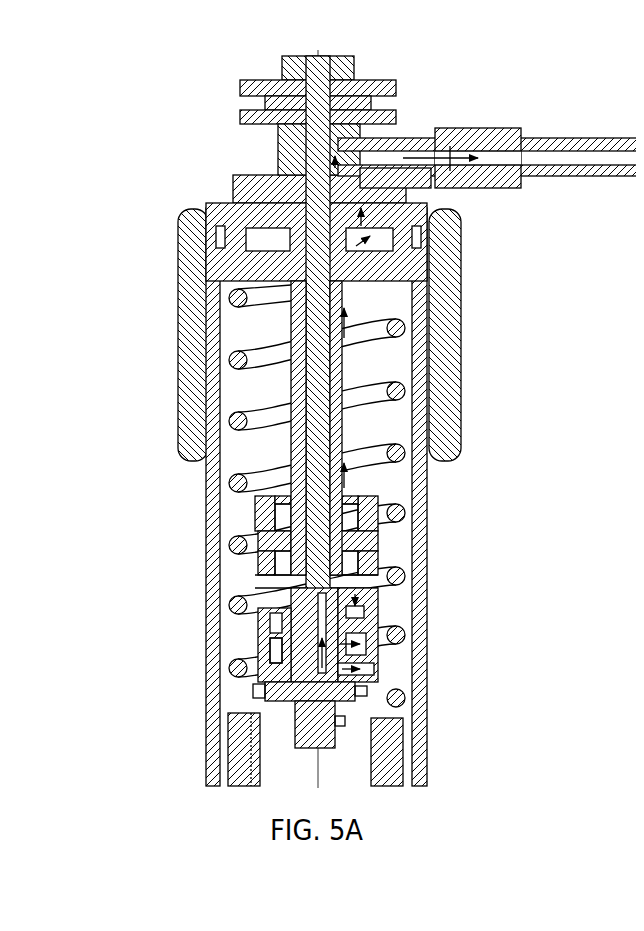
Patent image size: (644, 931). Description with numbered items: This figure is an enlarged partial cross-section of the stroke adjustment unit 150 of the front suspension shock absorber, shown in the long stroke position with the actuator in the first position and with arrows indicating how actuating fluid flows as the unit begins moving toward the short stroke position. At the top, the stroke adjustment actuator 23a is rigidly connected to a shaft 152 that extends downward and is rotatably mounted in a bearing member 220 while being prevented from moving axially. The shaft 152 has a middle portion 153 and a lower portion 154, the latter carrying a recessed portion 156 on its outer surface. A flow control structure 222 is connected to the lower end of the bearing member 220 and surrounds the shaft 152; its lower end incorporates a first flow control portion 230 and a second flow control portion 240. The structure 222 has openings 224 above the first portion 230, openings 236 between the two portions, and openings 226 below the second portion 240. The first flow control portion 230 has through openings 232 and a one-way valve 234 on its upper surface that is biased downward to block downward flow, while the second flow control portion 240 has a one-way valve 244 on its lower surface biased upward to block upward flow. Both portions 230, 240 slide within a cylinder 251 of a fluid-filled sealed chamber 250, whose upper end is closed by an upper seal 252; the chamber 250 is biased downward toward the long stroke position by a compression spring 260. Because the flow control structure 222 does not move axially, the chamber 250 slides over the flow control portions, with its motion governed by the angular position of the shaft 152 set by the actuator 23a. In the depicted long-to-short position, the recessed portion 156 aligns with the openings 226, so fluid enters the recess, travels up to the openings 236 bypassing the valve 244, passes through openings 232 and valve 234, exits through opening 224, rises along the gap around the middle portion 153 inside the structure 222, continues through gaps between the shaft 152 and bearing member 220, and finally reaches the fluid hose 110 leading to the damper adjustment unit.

The stroke adjustment unit 150 is at (136, 174).
The stroke adjustment actuator 23a is at (276, 76).
The fluid hose 110 is at (538, 130).
The shaft 152 is at (285, 323).
The middle portion 153 is at (400, 362).
The bearing member 220 is at (410, 243).
The flow control structure 222 is at (332, 370).
The compression spring 260 is at (228, 345).
The upper seal 252 is at (366, 525).
The openings 224 is at (352, 570).
The one-way valve 234 is at (356, 590).
The first flow control portion 230 is at (360, 618).
The openings 232 is at (360, 636).
The openings 236 is at (366, 662).
The second flow control portion 240 is at (359, 684).
The one-way valve 244 is at (338, 714).
The lower portion 154 is at (268, 588).
The recessed portion 156 is at (270, 626).
The openings 226 is at (270, 710).
The sealed chamber 250 is at (240, 730).
The cylinder 251 is at (250, 774).